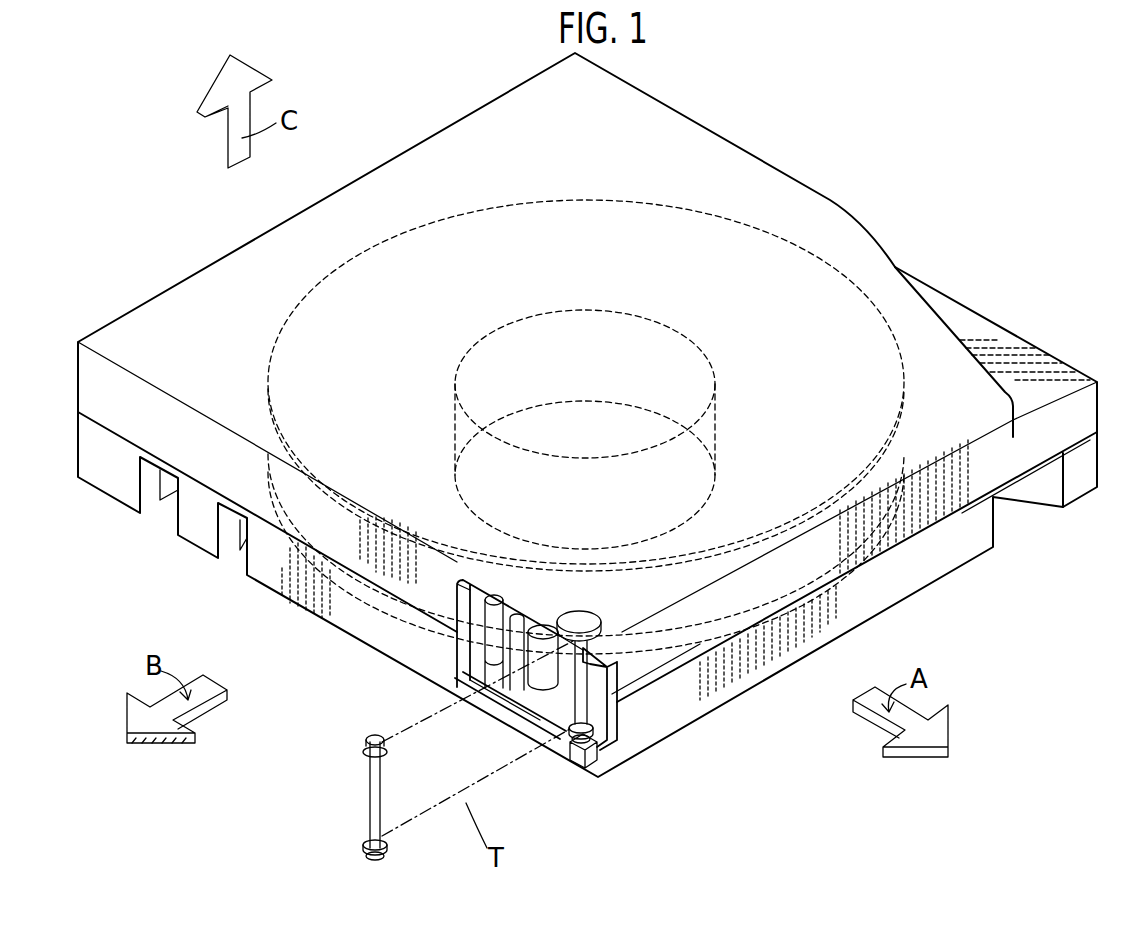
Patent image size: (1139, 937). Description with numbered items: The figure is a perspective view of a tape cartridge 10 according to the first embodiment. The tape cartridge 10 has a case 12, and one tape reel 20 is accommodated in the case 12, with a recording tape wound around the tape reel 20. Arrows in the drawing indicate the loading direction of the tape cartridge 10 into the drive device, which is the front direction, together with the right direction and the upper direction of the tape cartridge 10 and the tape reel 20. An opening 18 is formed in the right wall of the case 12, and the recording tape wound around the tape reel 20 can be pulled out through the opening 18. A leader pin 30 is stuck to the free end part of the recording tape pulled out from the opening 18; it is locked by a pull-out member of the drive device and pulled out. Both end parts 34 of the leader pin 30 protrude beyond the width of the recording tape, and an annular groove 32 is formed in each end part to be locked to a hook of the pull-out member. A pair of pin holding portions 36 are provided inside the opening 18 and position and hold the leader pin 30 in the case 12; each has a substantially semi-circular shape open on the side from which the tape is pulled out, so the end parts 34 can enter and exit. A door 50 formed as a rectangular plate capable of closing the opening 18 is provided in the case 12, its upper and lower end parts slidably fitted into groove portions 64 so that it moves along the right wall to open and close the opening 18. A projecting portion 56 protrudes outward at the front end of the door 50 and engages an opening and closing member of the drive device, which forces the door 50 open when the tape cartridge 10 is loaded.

The tape cartridge 10 is at (849, 147).
The case 12 is at (983, 292).
The tape reel 20 is at (587, 200).
The opening 18 is at (455, 683).
The leader pin 30 is at (617, 700).
The annular groove 32 is at (366, 753).
The end parts 34 is at (367, 736).
The pin holding portions 36 is at (560, 752).
The groove portions 64 is at (576, 628).
The projecting portion 56 is at (422, 642).
The door 50 is at (521, 642).